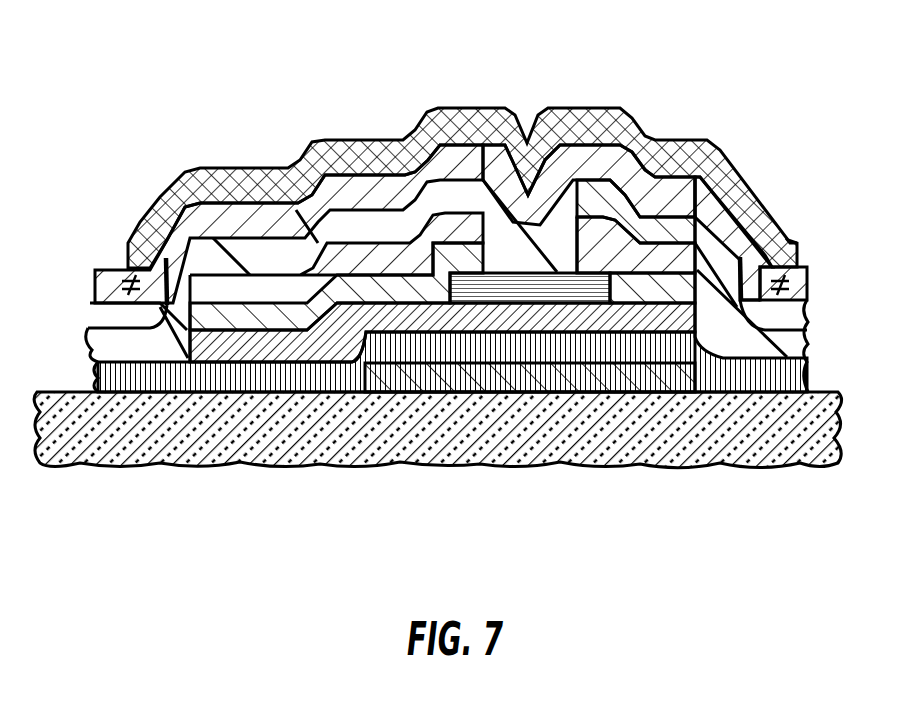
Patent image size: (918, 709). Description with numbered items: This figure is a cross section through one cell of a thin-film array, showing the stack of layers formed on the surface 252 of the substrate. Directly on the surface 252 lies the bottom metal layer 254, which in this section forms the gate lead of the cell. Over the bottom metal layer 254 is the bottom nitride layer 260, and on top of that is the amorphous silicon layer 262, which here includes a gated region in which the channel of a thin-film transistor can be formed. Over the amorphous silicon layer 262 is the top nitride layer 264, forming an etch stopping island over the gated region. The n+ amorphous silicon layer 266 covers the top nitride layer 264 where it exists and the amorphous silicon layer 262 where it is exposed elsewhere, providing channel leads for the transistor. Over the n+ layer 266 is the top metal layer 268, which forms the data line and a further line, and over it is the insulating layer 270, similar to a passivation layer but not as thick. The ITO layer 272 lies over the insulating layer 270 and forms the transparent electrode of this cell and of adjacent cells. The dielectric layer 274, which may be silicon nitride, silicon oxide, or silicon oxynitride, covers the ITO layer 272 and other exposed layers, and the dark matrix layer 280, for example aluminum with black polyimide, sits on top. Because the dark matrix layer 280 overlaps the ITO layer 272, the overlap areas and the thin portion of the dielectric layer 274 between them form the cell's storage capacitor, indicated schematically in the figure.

The surface 252 is at (80, 392).
The bottom metal layer 254 is at (528, 383).
The bottom nitride layer 260 is at (813, 380).
The amorphous silicon layer 262 is at (769, 237).
The top nitride layer 264 is at (567, 272).
The n+ amorphous silicon layer 266 is at (147, 272).
The top metal layer 268 is at (261, 277).
The insulating layer 270 is at (807, 331).
The ITO layer 272 is at (110, 315).
The dielectric layer 274 is at (799, 272).
The dark matrix layer 280 is at (797, 247).